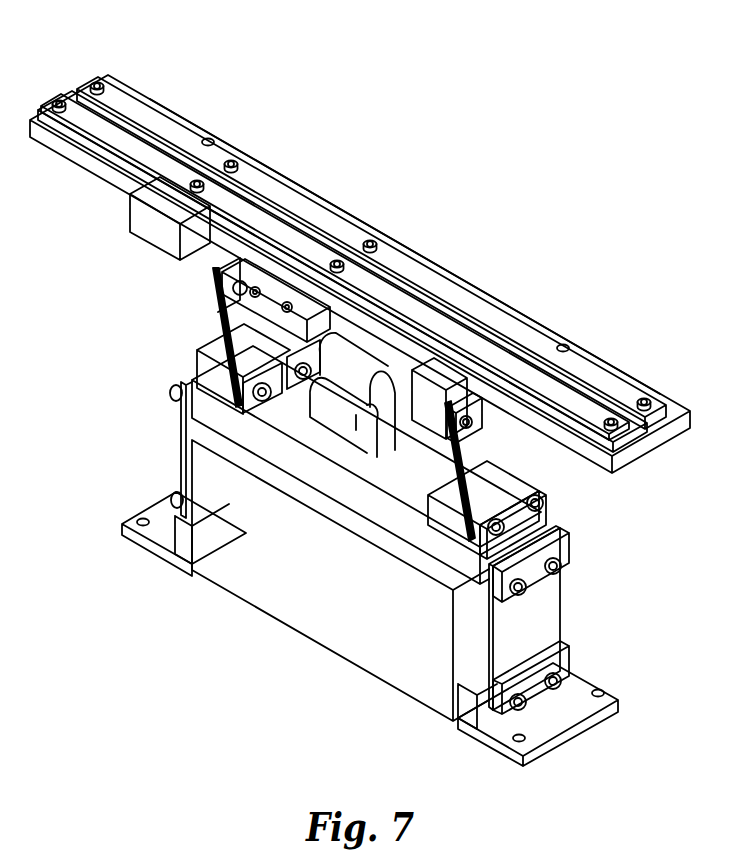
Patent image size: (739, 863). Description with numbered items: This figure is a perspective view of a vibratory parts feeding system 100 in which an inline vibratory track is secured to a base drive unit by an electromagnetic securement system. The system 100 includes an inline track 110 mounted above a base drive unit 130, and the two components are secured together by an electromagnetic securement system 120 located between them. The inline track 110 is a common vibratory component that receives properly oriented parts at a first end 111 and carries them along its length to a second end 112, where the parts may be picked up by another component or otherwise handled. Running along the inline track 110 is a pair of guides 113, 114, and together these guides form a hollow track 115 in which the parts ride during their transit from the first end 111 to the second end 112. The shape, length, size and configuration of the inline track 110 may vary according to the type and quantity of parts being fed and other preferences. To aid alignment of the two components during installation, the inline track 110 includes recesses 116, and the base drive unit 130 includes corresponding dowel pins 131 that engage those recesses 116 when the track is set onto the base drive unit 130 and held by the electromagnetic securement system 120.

The vibratory parts feeding system 100 is at (456, 154).
The inline track 110 is at (634, 355).
The first end 111 is at (57, 98).
The second end 112 is at (647, 433).
The guide 113 is at (237, 212).
The guide 114 is at (275, 195).
The hollow track 115 is at (424, 300).
The recesses 116 is at (199, 128).
The electromagnetic securement system 120 is at (207, 331).
The base drive unit 130 is at (203, 597).
The dowel pins 131 is at (213, 137).